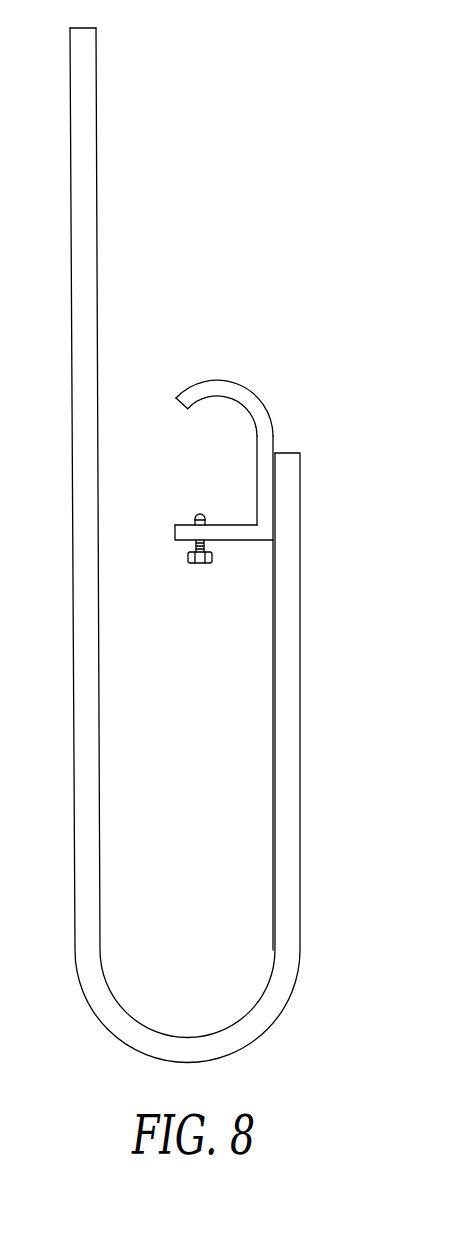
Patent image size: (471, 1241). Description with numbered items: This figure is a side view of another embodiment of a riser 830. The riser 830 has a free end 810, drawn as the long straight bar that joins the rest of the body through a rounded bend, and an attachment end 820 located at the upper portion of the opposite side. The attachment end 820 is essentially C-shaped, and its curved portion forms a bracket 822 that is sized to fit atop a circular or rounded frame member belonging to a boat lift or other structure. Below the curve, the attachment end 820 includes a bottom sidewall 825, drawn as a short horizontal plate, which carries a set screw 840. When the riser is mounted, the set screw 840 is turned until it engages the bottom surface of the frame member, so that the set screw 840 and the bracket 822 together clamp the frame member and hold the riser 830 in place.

The free end 810 is at (70, 133).
The attachment end 820 is at (272, 409).
The bracket 822 is at (217, 380).
The bottom sidewall 825 is at (195, 522).
The riser 830 is at (256, 68).
The set screw 840 is at (200, 564).